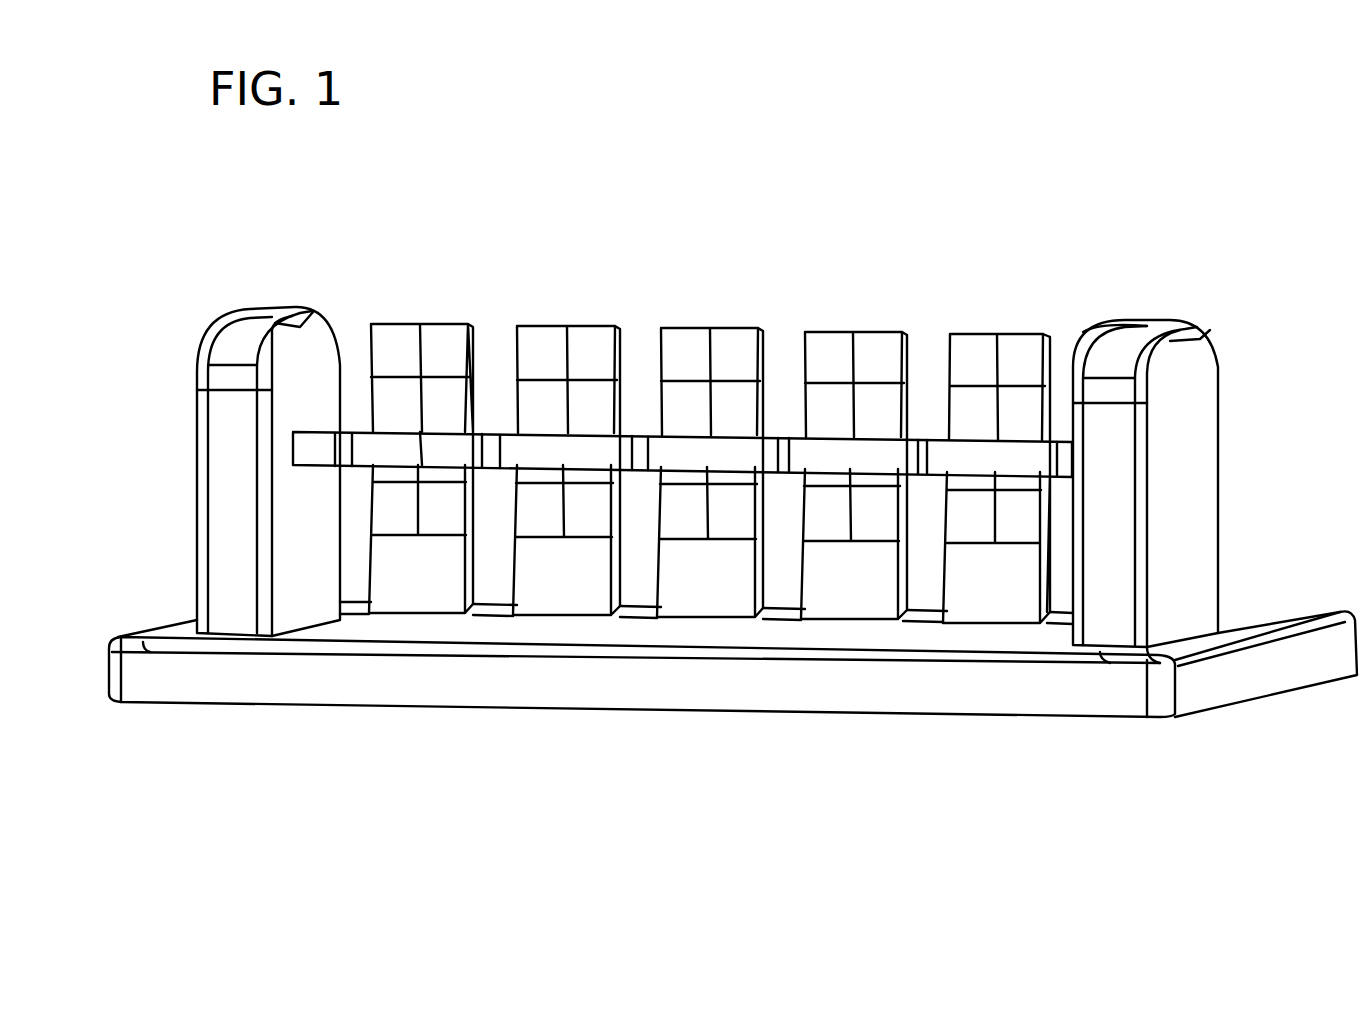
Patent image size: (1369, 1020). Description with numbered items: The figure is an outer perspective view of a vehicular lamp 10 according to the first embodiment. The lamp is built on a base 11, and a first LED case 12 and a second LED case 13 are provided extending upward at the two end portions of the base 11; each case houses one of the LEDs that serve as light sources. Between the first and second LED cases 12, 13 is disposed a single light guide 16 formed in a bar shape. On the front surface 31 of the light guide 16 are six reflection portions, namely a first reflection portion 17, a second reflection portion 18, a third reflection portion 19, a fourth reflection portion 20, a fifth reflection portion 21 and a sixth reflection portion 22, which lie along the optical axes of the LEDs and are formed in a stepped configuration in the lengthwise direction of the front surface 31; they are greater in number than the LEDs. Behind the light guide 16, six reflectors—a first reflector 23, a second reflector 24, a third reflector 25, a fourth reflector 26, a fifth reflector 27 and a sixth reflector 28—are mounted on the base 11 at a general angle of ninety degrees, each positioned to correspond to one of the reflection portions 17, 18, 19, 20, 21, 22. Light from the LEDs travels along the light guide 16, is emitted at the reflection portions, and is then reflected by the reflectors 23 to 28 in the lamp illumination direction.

The vehicular lamp 10 is at (1003, 222).
The base 11 is at (200, 677).
The first LED case 12 is at (224, 311).
The second LED case 13 is at (1193, 320).
The light guide 16 is at (783, 437).
The first reflection portion 17 is at (342, 452).
The second reflection portion 18 is at (496, 452).
The third reflection portion 19 is at (638, 455).
The fourth reflection portion 20 is at (1060, 462).
The fifth reflection portion 21 is at (922, 458).
The sixth reflection portion 22 is at (781, 456).
The first reflector 23 is at (375, 322).
The second reflector 24 is at (523, 325).
The third reflector 25 is at (665, 328).
The fourth reflector 26 is at (1087, 322).
The fifth reflector 27 is at (1033, 325).
The sixth reflector 28 is at (887, 330).
The front surface 31 is at (447, 447).